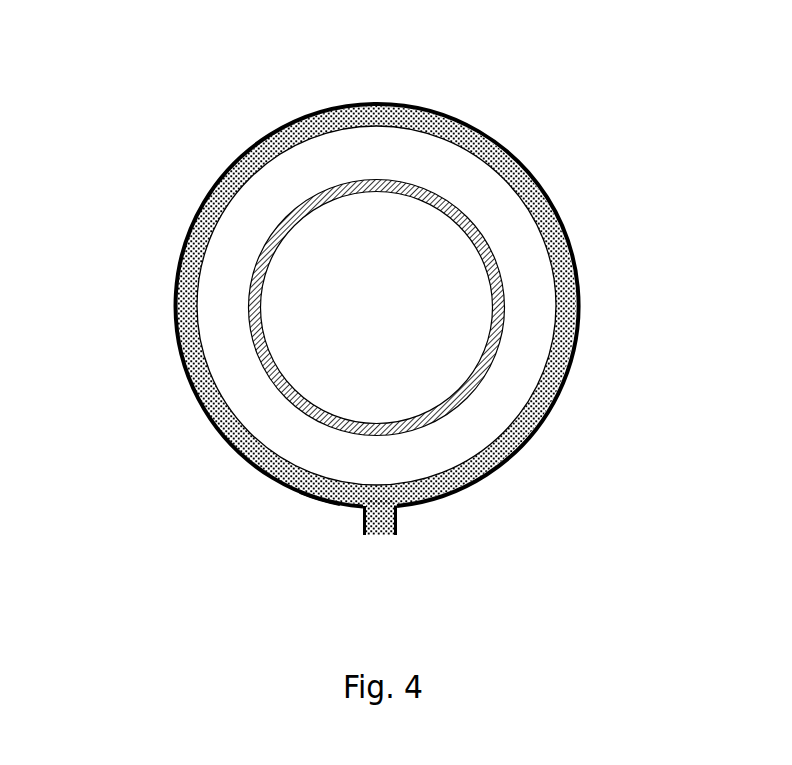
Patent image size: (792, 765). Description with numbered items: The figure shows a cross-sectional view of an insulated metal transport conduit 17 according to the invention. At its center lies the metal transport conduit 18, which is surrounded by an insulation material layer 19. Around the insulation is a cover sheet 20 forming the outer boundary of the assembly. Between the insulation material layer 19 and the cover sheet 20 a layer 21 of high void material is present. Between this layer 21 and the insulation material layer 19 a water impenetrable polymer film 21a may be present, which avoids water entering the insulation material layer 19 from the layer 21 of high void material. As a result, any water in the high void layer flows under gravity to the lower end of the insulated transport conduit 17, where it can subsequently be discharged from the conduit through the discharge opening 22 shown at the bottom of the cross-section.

The insulated metal transport conduit 17 is at (652, 289).
The metal transport conduit 18 is at (483, 237).
The insulation material layer 19 is at (520, 282).
The cover sheet 20 is at (580, 320).
The layer of high void material 21 is at (542, 425).
The water impenetrable polymer film 21a is at (320, 500).
The discharge opening 22 is at (397, 525).